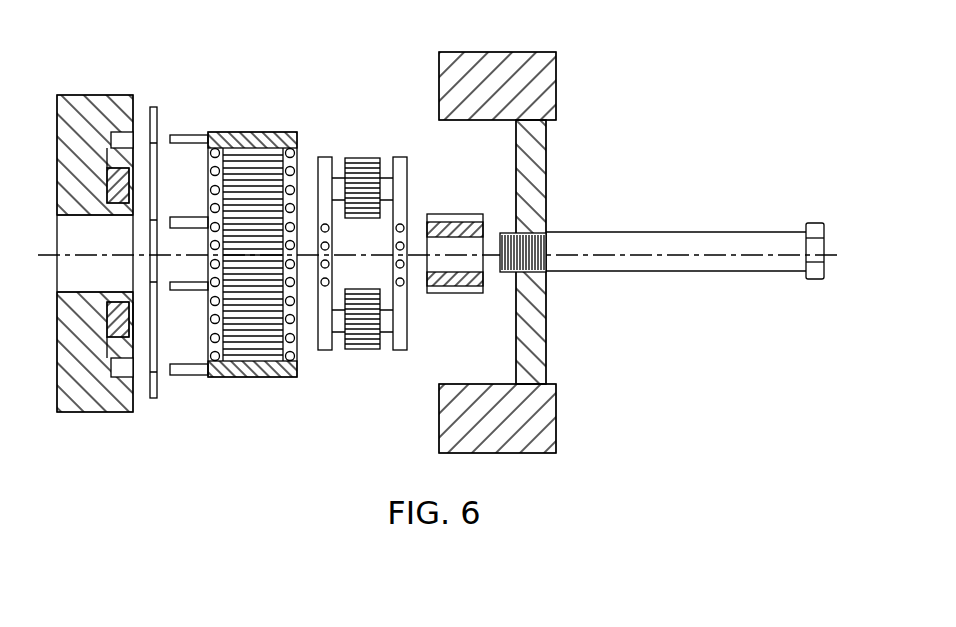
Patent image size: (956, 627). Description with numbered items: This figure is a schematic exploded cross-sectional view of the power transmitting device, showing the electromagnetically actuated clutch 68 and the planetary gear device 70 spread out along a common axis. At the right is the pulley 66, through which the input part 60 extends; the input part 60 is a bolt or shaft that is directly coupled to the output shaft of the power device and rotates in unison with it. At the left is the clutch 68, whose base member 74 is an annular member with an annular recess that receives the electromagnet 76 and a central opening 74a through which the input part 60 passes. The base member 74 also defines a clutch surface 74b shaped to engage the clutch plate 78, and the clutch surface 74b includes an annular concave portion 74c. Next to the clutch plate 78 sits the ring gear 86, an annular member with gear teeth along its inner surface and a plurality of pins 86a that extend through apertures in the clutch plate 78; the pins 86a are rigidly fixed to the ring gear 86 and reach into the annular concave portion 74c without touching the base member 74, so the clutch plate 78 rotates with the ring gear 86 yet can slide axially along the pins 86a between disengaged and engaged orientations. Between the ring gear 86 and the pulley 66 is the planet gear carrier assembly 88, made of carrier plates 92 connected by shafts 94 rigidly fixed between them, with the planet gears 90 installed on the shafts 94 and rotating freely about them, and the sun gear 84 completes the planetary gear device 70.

The input part 60 is at (738, 242).
The pulley 66 is at (512, 75).
The clutch 68 is at (77, 94).
The planetary gear device 70 is at (258, 77).
The base member 74 is at (113, 108).
The central opening 74a is at (84, 292).
The clutch surface 74b is at (133, 321).
The annular concave portion 74c is at (123, 365).
The electromagnet 76 is at (108, 328).
The clutch plate 78 is at (153, 110).
The sun gear 84 is at (470, 293).
The ring gear 86 is at (277, 140).
The pins 86a is at (185, 138).
The planet gear carrier assembly 88 is at (325, 165).
The planet gears 90 is at (365, 165).
The carrier plates 92 is at (400, 164).
The shafts 94 is at (389, 188).